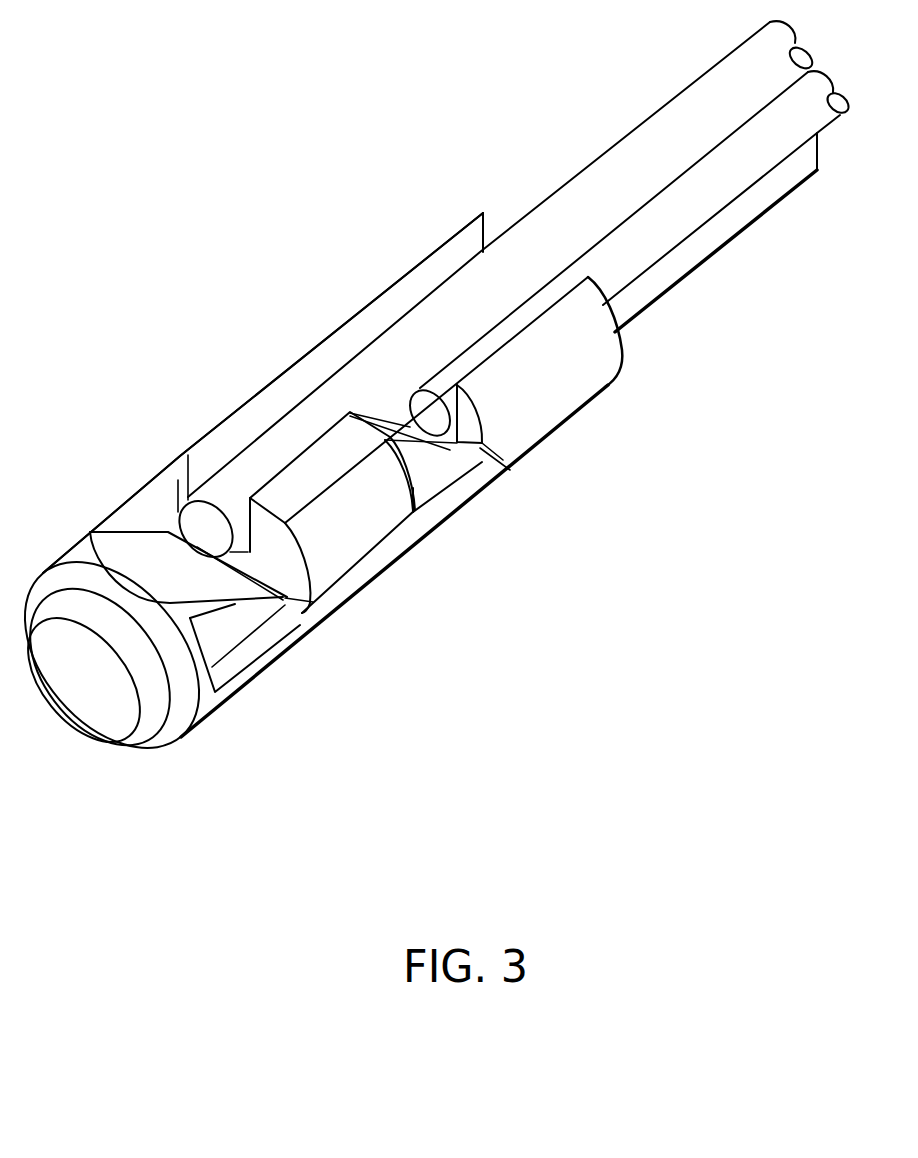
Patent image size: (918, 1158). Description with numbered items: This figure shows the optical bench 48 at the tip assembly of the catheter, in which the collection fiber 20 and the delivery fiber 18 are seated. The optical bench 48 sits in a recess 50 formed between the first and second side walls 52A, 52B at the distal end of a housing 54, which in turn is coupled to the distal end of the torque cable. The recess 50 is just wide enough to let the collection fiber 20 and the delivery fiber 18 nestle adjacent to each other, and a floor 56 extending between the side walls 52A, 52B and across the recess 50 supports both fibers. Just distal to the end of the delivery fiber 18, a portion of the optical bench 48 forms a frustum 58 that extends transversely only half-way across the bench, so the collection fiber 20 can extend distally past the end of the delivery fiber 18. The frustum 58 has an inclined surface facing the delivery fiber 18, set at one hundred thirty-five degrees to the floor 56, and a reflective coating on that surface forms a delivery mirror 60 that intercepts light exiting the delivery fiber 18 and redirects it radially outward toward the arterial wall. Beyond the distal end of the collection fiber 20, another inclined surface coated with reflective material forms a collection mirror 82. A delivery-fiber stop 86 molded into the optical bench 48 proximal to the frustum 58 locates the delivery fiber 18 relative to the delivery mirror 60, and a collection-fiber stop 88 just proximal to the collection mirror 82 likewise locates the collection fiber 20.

The optical bench 48 is at (293, 188).
The recess 50 is at (155, 493).
The housing 54 is at (110, 745).
The collection fiber 20 is at (600, 152).
The delivery fiber 18 is at (820, 118).
The first side wall 52A is at (250, 402).
The second side wall 52B is at (560, 412).
The collection mirror 82 is at (120, 546).
The collection-fiber stop 88 is at (312, 648).
The floor 56 is at (303, 610).
The frustum 58 is at (415, 465).
The delivery mirror 60 is at (486, 467).
The delivery-fiber stop 86 is at (497, 452).